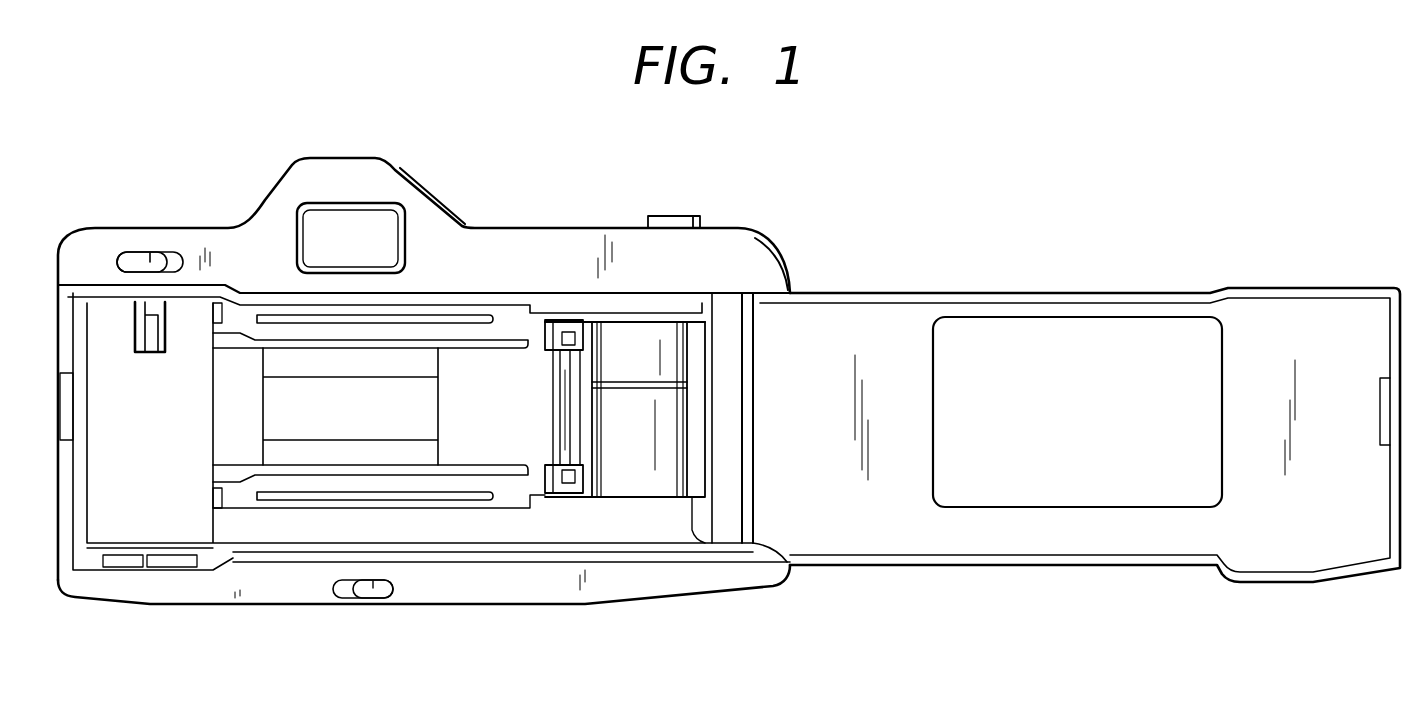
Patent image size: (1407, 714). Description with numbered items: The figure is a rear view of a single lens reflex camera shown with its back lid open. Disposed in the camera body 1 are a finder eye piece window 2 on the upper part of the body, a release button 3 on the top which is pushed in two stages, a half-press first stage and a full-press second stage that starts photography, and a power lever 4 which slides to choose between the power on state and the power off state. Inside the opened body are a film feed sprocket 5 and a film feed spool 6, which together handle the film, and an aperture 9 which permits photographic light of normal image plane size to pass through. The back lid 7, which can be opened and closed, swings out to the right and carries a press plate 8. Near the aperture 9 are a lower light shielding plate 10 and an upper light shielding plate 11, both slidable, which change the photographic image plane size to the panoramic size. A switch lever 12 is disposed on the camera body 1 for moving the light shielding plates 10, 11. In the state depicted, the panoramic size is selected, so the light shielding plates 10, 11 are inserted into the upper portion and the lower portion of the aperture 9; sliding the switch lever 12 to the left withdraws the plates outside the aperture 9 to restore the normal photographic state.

The camera body 1 is at (512, 247).
The finder eye piece window 2 is at (384, 222).
The release button 3 is at (670, 222).
The power lever 4 is at (127, 258).
The film feed sprocket 5 is at (570, 445).
The film feed spool 6 is at (653, 480).
The back lid 7 is at (1174, 310).
The press plate 8 is at (1035, 343).
The aperture 9 is at (423, 463).
The lower light shielding plate 10 is at (282, 455).
The upper light shielding plate 11 is at (307, 360).
The switch lever 12 is at (373, 590).